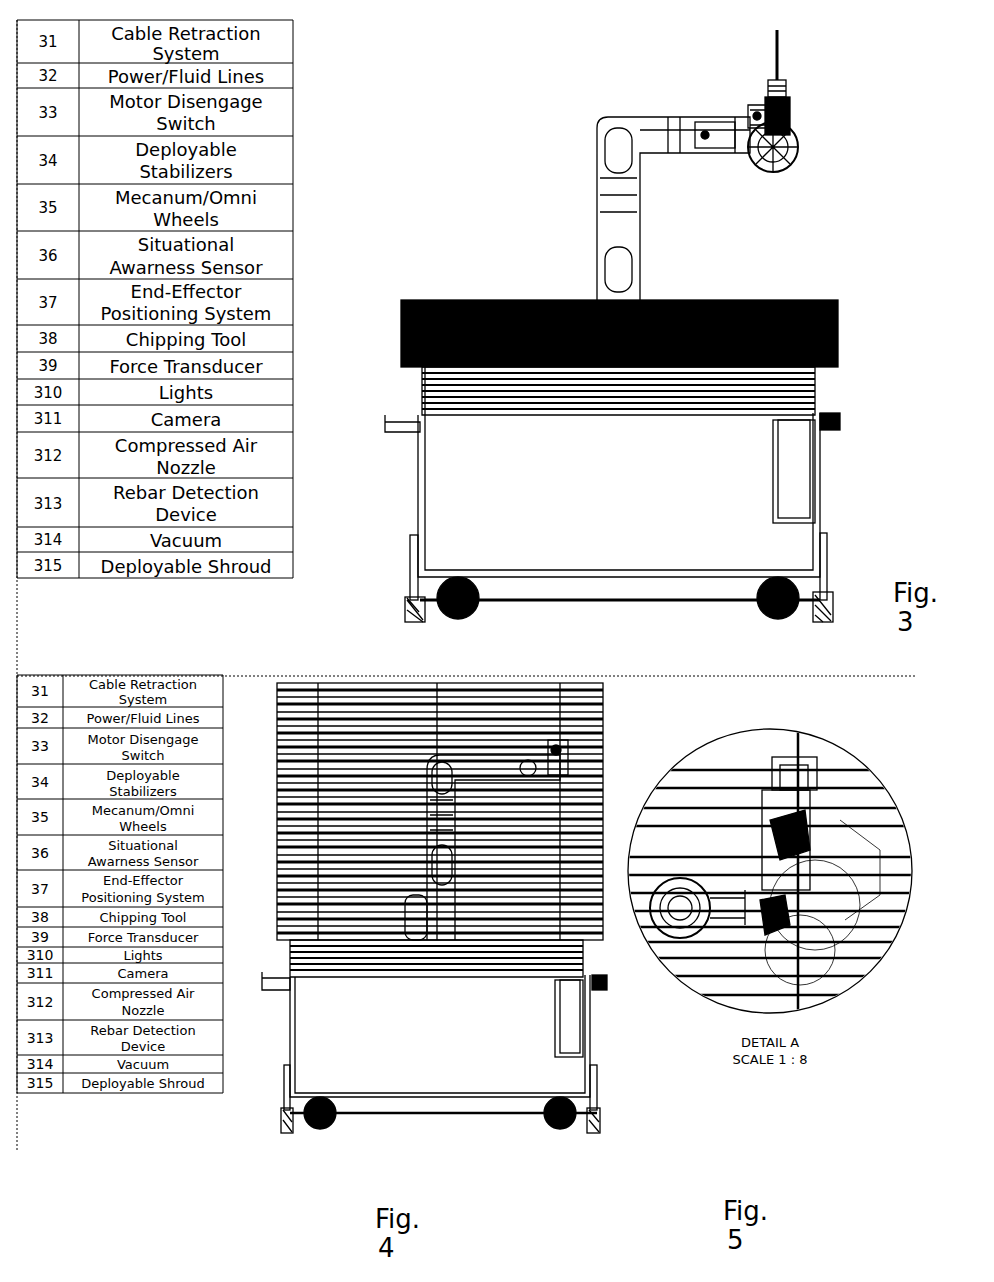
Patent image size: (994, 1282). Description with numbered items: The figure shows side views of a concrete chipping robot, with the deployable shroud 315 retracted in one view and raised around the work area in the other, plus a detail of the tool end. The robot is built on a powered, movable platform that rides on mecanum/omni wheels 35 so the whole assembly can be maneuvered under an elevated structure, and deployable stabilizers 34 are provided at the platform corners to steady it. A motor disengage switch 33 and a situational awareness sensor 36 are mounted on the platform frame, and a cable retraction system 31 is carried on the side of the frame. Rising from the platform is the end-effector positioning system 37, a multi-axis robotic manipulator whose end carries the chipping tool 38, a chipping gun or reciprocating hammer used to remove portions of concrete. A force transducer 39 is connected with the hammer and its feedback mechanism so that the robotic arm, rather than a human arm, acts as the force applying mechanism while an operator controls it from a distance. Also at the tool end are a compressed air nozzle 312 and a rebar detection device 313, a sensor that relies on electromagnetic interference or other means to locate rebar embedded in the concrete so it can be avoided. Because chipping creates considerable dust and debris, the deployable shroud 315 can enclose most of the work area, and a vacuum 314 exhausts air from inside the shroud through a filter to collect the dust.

In FIG. 3, the cable retraction system 31 is at (797, 492).
In FIG. 4, the cable retraction system 31 is at (572, 1030).
In FIG. 3, the motor disengage switch 33 is at (385, 420).
In FIG. 4, the motor disengage switch 33 is at (266, 978).
In FIG. 3, the deployable stabilizers 34 is at (412, 566).
In FIG. 4, the deployable stabilizers 34 is at (283, 1086).
In FIG. 3, the mecanum/omni wheels 35 is at (446, 612).
In FIG. 4, the mecanum/omni wheels 35 is at (314, 1126).
In FIG. 3, the situational awareness sensor 36 is at (841, 413).
In FIG. 4, the situational awareness sensor 36 is at (607, 991).
In FIG. 3, the end-effector positioning system 37 is at (597, 119).
In FIG. 4, the end-effector positioning system 37 is at (425, 752).
In FIG. 3, the chipping tool 38 is at (793, 113).
In FIG. 5, the chipping tool 38 is at (817, 845).
In FIG. 3, the force transducer 39 is at (787, 78).
In FIG. 5, the force transducer 39 is at (813, 762).
In FIG. 3, the compressed air nozzle 312 is at (752, 108).
In FIG. 5, the compressed air nozzle 312 is at (740, 838).
In FIG. 3, the rebar detection device 313 is at (809, 158).
In FIG. 5, the rebar detection device 313 is at (841, 977).
In FIG. 4, the vacuum 314 is at (385, 930).
In FIG. 3, the deployable shroud 315 is at (403, 298).
In FIG. 4, the deployable shroud 315 is at (278, 782).